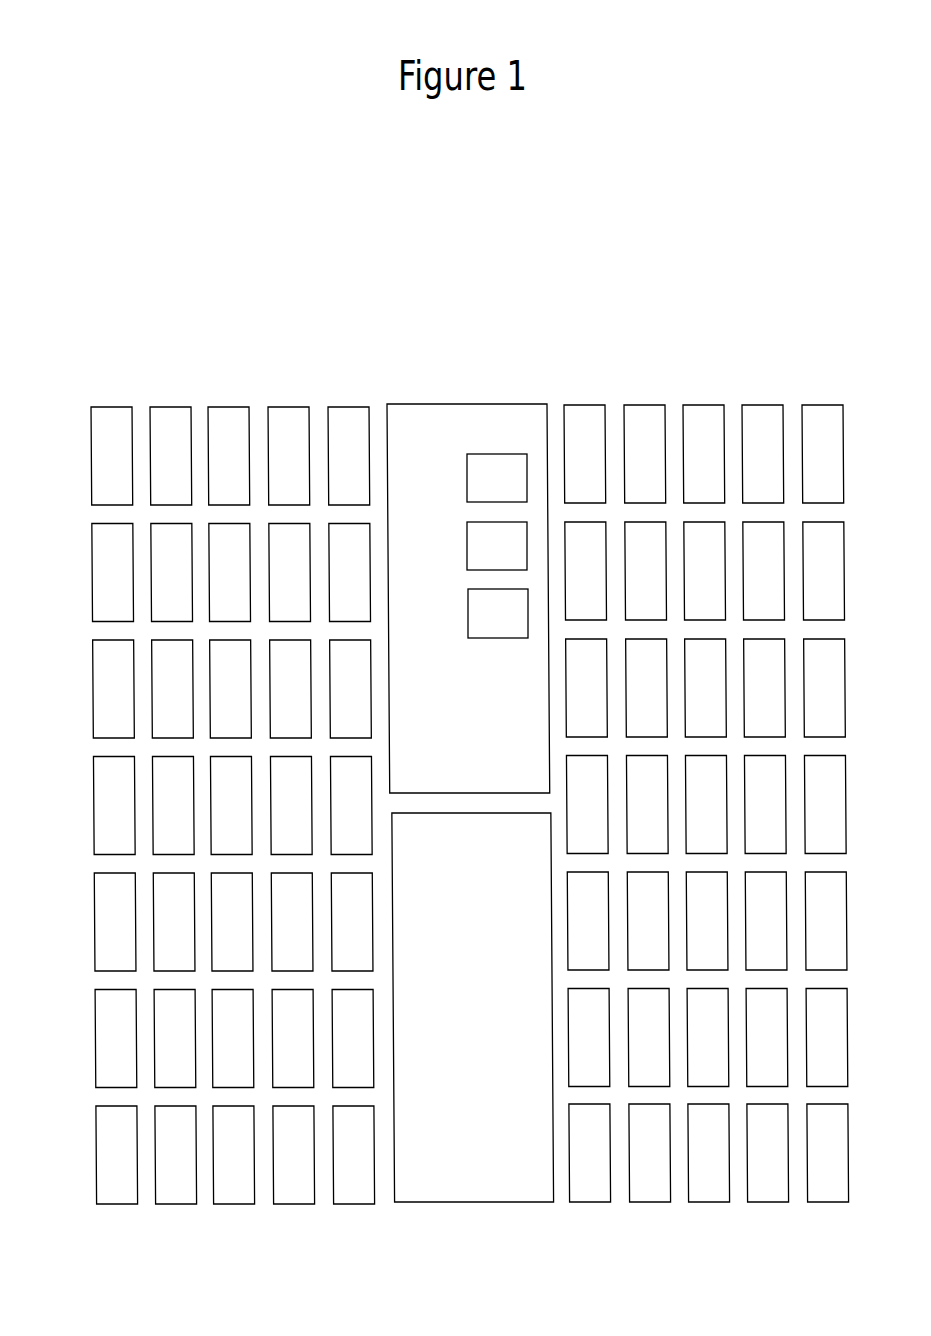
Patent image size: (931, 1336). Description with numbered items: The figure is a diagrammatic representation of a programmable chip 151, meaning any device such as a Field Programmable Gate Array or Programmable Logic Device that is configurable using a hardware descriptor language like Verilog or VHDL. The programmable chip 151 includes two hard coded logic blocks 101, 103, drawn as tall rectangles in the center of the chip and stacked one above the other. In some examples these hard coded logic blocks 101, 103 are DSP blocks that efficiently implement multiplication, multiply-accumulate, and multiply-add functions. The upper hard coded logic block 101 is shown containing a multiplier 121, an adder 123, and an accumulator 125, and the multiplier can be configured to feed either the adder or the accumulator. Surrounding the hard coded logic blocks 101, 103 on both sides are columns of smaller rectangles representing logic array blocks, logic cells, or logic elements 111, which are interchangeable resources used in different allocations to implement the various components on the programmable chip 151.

The programmable chip 151 is at (149, 250).
The logic elements 111 is at (762, 404).
The hard coded logic block 101 is at (436, 436).
The hard coded logic block 103 is at (437, 844).
The multiplier 121 is at (497, 478).
The adder 123 is at (497, 546).
The accumulator 125 is at (498, 613).